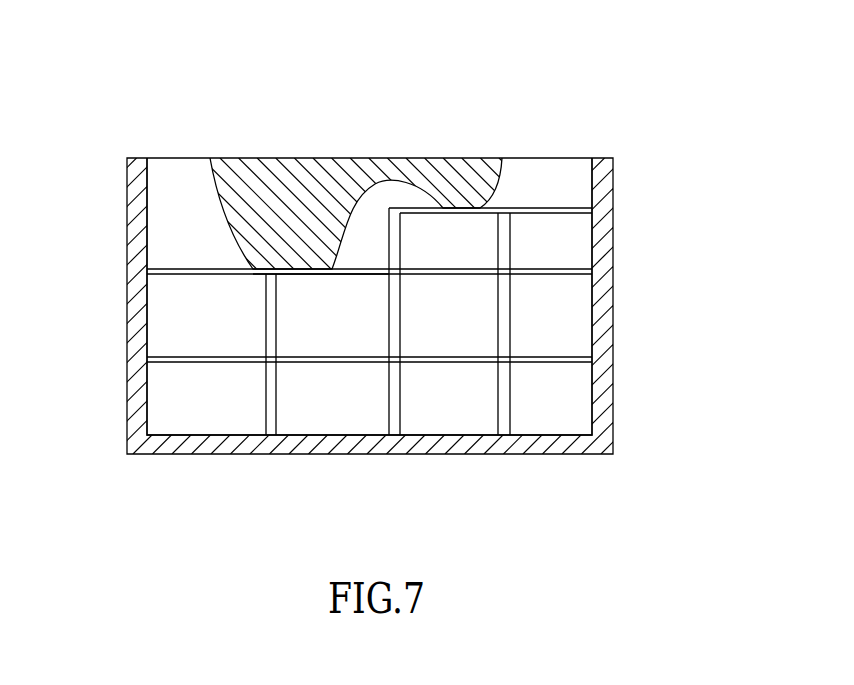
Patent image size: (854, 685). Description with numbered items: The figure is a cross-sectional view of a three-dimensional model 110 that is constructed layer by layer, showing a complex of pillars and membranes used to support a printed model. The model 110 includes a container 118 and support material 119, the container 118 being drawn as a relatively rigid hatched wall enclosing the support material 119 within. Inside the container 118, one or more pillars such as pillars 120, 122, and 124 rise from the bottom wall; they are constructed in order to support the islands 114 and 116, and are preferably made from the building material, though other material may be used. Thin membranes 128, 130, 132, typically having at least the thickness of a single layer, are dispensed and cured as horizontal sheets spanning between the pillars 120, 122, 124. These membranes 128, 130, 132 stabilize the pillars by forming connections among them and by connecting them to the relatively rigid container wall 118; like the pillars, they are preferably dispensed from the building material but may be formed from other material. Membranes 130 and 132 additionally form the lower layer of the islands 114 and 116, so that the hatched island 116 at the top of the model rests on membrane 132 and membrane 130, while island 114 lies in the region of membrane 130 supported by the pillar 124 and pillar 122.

The 3-D model 110 is at (624, 31).
The container 118 is at (605, 392).
The support material 119 is at (573, 312).
The island 116 is at (448, 195).
The membrane 132 is at (547, 208).
The membrane 130 is at (183, 268).
The membrane 128 is at (183, 357).
The pillar 124 is at (272, 423).
The pillar 122 is at (395, 423).
The pillar 120 is at (503, 423).
The island 114 is at (301, 275).